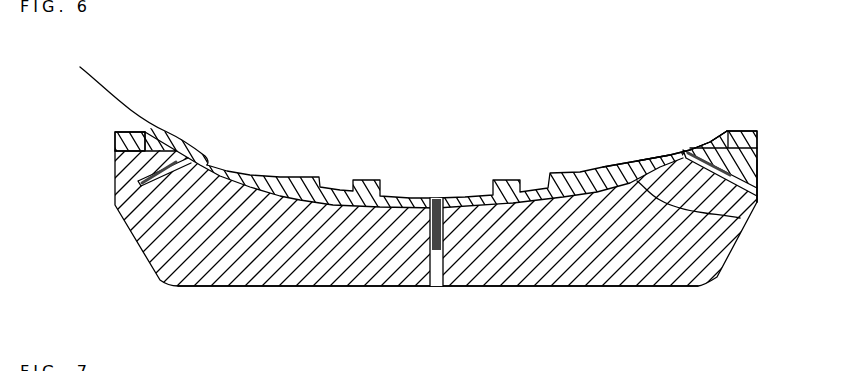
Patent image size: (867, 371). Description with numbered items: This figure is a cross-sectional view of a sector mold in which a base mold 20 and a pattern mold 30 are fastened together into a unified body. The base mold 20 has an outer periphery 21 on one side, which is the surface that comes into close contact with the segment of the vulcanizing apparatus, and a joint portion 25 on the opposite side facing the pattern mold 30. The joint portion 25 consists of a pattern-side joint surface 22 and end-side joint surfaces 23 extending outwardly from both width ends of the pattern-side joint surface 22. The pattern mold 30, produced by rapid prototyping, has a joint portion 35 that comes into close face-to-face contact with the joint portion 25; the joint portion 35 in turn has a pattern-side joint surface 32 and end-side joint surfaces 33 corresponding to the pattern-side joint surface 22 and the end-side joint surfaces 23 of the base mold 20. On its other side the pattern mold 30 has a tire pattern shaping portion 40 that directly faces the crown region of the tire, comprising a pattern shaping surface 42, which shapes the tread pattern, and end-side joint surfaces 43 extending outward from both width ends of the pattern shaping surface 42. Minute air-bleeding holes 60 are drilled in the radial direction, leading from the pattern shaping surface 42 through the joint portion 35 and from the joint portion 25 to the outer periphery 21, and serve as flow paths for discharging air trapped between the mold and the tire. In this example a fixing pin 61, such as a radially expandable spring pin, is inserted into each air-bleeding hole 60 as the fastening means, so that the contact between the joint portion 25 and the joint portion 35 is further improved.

The base mold 20 is at (124, 240).
The outer periphery 21 is at (352, 286).
The pattern-side joint surface 22 is at (130, 109).
The end-side joint surface 23 is at (115, 132).
The joint portion 25 is at (60, 52).
The pattern mold 30 is at (272, 156).
The pattern-side joint surface 32 is at (740, 218).
The end-side joint surface 33 is at (757, 172).
The joint portion 35 is at (787, 190).
The tire pattern shaping portion 40 is at (728, 70).
The pattern shaping surface 42 is at (661, 156).
The end-side joint surface 43 is at (713, 140).
The air-bleeding hole 60 is at (114, 182).
The fixing pin 61 is at (143, 165).